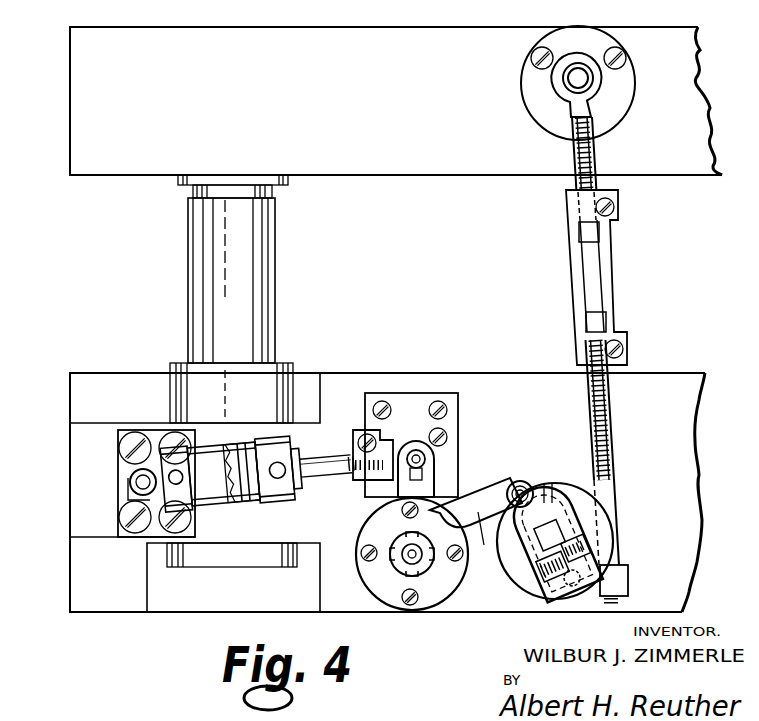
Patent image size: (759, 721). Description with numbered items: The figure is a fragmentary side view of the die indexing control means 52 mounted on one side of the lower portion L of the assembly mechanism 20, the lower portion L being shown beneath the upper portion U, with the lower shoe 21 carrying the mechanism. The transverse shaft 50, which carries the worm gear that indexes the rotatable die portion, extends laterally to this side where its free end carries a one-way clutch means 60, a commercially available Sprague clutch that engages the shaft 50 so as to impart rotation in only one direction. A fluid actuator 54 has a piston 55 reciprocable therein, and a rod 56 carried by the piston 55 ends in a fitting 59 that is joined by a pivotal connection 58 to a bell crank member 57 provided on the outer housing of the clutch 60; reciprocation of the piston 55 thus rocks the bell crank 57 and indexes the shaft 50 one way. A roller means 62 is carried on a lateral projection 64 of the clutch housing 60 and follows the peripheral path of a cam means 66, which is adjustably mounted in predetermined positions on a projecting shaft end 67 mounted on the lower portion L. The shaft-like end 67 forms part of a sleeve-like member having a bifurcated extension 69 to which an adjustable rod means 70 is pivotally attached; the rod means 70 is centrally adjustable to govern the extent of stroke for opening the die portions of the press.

The assembly mechanism 20 is at (75, 118).
The lower die shoe 21 is at (70, 388).
The upper shoe U is at (693, 84).
The lower portion L is at (683, 401).
The adjustable rod means 70 is at (594, 397).
The fitting 59 is at (363, 432).
The rod 56 is at (326, 462).
The pivotal connection 58 is at (426, 459).
The bell crank member 57 is at (420, 487).
The piston 55 is at (247, 488).
The fluid actuator 54 is at (294, 500).
The one-way clutch means 60 is at (366, 580).
The transverse shaft 50 is at (420, 560).
The lateral projection 64 is at (480, 548).
The roller means 62 is at (521, 481).
The indexing control means 52 is at (568, 483).
The cam means 66 is at (608, 526).
The projecting shaft end 67 is at (548, 545).
The bifurcated extension 69 is at (628, 582).